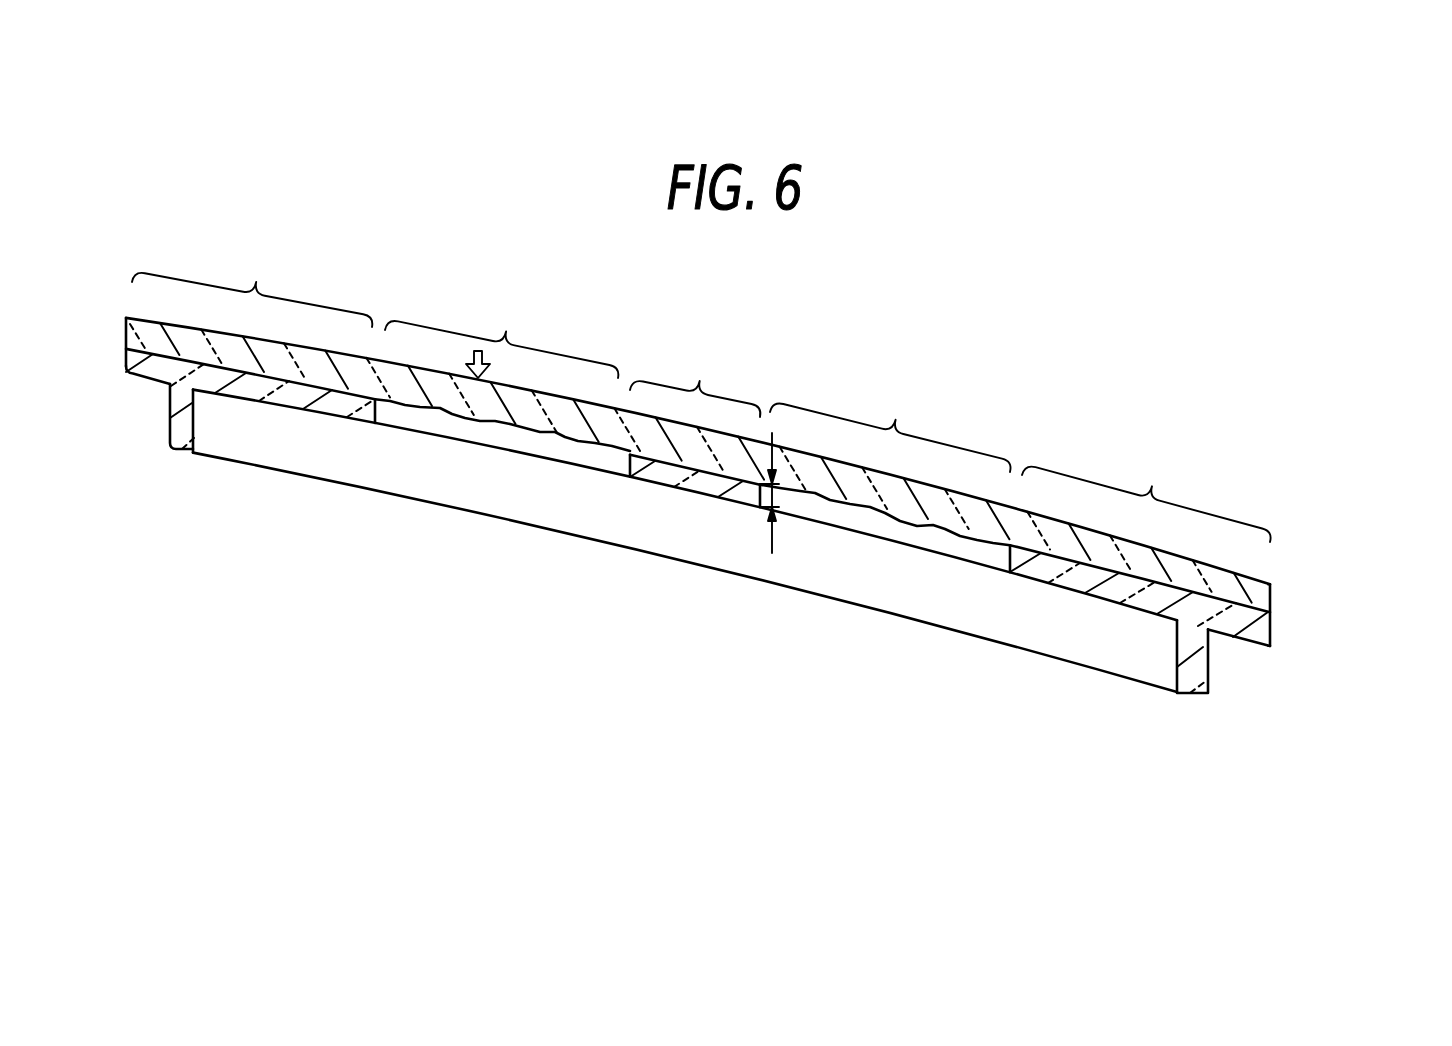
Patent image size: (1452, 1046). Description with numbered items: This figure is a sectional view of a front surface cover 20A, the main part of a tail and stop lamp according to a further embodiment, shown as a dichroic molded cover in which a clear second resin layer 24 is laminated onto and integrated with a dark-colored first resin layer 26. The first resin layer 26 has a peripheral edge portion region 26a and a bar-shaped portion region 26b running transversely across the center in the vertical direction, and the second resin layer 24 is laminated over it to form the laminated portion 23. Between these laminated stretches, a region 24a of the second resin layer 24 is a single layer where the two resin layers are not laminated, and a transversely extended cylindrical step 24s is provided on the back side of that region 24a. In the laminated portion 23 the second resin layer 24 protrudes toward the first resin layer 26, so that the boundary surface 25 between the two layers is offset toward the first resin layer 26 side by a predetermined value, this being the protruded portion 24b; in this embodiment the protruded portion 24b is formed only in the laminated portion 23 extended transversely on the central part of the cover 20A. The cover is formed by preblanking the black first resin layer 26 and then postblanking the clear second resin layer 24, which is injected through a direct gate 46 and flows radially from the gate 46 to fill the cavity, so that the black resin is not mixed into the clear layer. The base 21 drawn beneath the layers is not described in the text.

The front surface cover 20A is at (1372, 573).
The base body 21 is at (183, 457).
The laminated portion 23 is at (701, 393).
The second resin layer 24 is at (1272, 586).
The single-layer region of the second resin layer 24a is at (698, 384).
The protruded portion 24b is at (303, 374).
The cylindrical step 24s is at (492, 424).
The boundary surface 25 is at (757, 506).
The first resin layer 26 is at (1272, 632).
The peripheral edge portion region 26a is at (152, 384).
The bar-shaped portion region 26b is at (643, 476).
The direct gate 46 is at (472, 350).